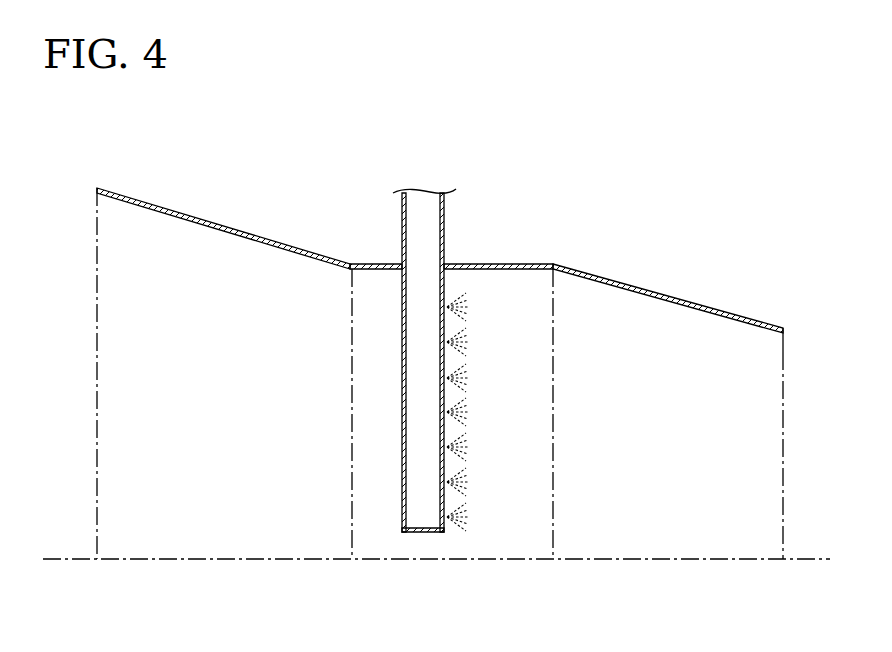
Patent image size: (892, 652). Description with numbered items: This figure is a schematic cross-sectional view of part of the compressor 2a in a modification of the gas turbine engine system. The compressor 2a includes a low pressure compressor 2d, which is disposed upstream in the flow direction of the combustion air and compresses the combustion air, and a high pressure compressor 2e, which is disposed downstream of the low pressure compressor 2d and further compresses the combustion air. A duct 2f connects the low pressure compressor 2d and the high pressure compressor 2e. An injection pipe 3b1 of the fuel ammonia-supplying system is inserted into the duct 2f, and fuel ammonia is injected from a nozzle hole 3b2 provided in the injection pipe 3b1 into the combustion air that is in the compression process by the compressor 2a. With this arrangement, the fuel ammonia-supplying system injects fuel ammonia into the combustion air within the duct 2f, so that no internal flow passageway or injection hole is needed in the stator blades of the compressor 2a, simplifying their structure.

The compressor 2a is at (771, 246).
The low pressure compressor 2d is at (251, 259).
The high pressure compressor 2e is at (646, 325).
The duct 2f is at (528, 264).
The injection pipe 3b1 is at (445, 219).
The nozzle hole 3b2 is at (447, 483).